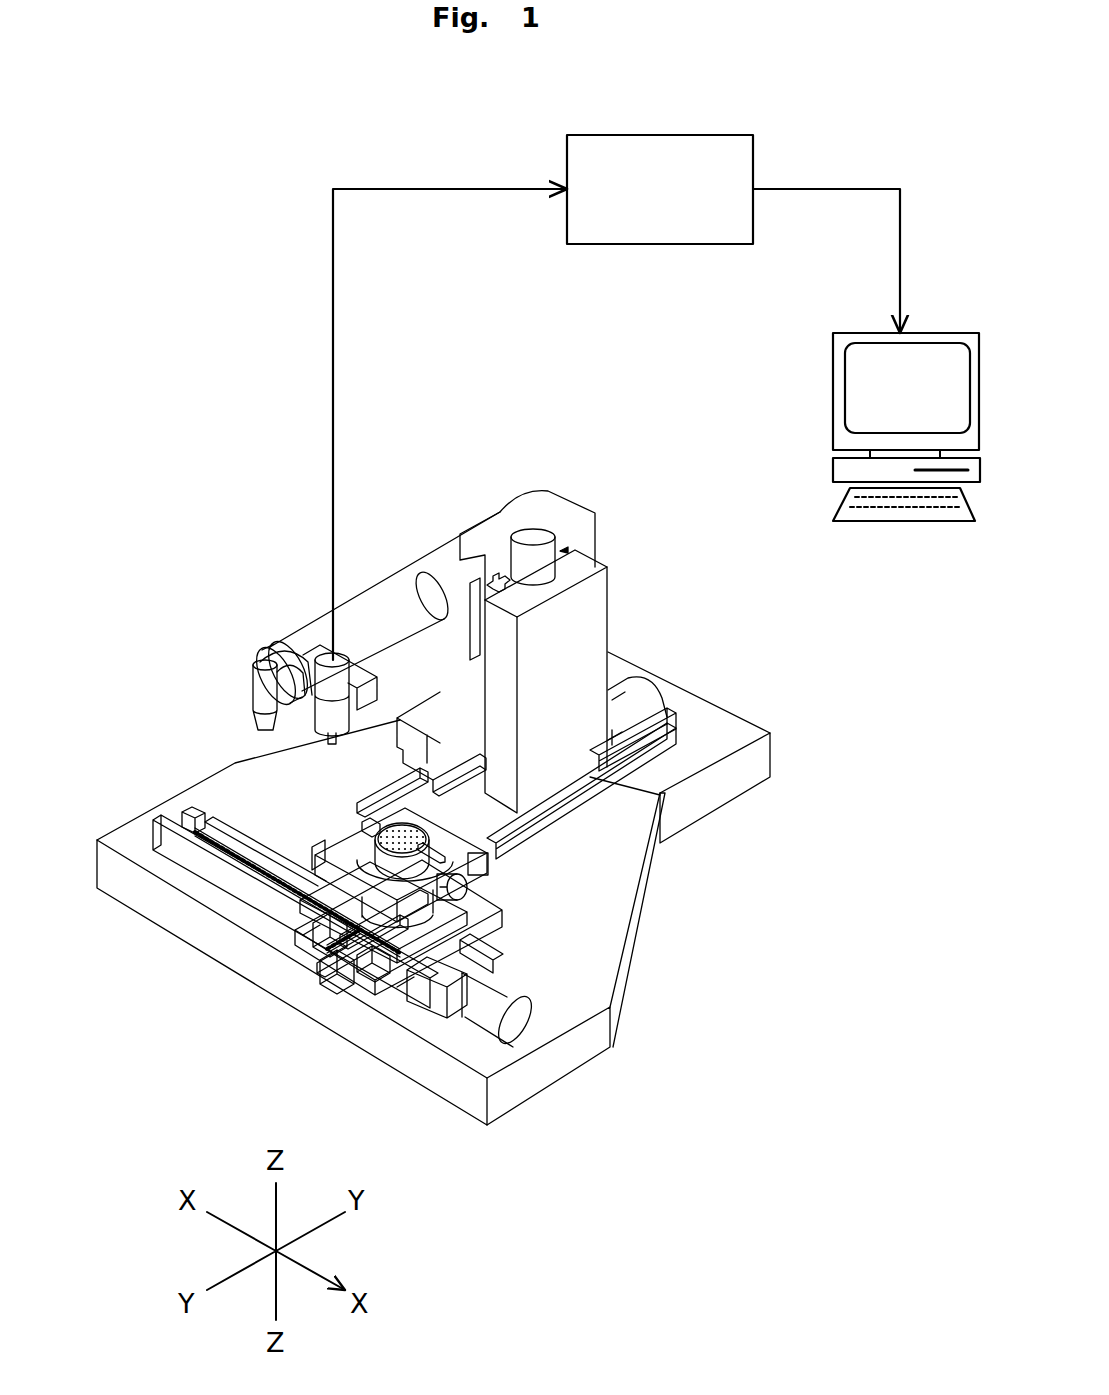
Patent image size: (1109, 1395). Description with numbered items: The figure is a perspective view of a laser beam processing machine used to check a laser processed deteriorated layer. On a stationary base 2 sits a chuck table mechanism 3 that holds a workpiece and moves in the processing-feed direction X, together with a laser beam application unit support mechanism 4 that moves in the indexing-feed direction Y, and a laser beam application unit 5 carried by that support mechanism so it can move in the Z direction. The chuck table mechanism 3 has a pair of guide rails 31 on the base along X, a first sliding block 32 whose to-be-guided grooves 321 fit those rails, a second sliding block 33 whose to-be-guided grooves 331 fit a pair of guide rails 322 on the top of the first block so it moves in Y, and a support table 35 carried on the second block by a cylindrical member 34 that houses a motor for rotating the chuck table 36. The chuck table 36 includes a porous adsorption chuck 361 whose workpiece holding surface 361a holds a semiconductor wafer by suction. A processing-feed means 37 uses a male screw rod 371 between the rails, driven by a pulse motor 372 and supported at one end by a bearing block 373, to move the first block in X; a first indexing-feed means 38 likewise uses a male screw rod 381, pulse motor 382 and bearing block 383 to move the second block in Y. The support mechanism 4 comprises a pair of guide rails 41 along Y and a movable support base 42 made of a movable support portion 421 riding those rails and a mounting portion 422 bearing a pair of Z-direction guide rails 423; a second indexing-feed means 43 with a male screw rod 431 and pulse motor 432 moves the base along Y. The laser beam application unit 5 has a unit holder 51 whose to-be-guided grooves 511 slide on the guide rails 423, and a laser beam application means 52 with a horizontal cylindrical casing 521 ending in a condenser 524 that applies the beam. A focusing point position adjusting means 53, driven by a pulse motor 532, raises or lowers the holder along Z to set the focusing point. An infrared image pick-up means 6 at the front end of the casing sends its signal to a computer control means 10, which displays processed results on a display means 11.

The stationary base 2 is at (690, 935).
The chuck table mechanism 3 is at (580, 950).
The laser beam application unit support mechanism 4 is at (700, 790).
The laser beam application unit 5 is at (300, 590).
The infrared image pick-up means 6 is at (318, 712).
The control means 10 is at (660, 133).
The display means 11 is at (935, 333).
The guide rails 31 is at (200, 808).
The first sliding block 32 is at (380, 975).
The second sliding block 33 is at (423, 913).
The cylindrical member 34 is at (420, 1020).
The support table 35 is at (462, 858).
The chuck table 36 is at (337, 848).
The processing-feed means 37 is at (452, 1030).
The first indexing-feed means 38 is at (482, 893).
The guide rails 41 is at (383, 787).
The movable support base 42 is at (612, 635).
The second indexing-feed means 43 is at (670, 703).
The unit holder 51 is at (495, 530).
The laser beam application means 52 is at (345, 592).
The focusing point position adjusting means 53 is at (535, 530).
The to-be-guided grooves 321 is at (430, 1000).
The guide rails 322 is at (330, 935).
The to-be-guided grooves 331 is at (280, 905).
The adsorption chuck 361 is at (480, 842).
The workpiece holding surface 361a is at (395, 825).
The male screw rod 371 is at (215, 870).
The pulse motor 372 is at (515, 1040).
The bearing block 373 is at (183, 808).
The male screw rod 381 is at (330, 930).
The pulse motor 382 is at (492, 888).
The bearing block 383 is at (362, 960).
The movable support portion 421 is at (420, 710).
The mounting portion 422 is at (610, 625).
The guide rails 423 is at (490, 572).
The male screw rod 431 is at (460, 785).
The pulse motor 432 is at (645, 682).
The to-be-guided grooves 511 is at (475, 590).
The cylindrical casing 521 is at (305, 632).
The condenser 524 is at (252, 690).
The pulse motor 532 is at (540, 540).